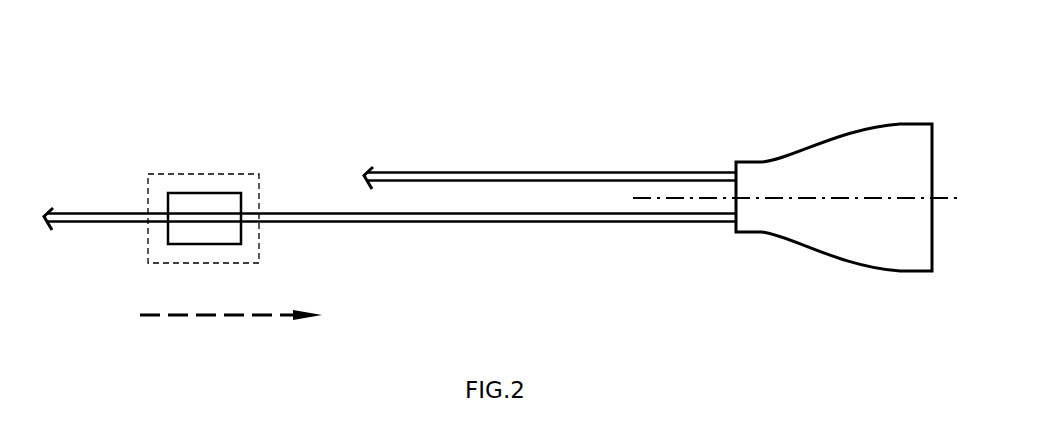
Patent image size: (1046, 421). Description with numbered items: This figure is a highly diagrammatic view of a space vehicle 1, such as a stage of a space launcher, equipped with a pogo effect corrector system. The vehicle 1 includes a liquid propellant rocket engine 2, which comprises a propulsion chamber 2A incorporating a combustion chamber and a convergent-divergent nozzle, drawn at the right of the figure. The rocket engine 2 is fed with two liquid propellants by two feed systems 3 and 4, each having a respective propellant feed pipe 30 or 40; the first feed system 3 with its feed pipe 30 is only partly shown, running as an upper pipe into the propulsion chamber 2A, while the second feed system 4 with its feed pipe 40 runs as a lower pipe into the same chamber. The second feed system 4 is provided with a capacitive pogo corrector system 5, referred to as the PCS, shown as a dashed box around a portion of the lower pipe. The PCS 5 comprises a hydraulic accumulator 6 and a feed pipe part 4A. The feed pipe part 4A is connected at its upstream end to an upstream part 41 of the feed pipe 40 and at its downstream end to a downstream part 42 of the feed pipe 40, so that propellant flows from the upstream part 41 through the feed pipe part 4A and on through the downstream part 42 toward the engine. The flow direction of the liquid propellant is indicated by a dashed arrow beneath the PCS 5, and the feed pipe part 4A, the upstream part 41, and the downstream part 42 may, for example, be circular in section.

The space vehicle 1 is at (631, 80).
The liquid propellant rocket engine 2 is at (861, 123).
The propulsion chamber 2A is at (786, 157).
The first feed system 3 is at (415, 158).
The propellant feed pipe 30 is at (493, 173).
The second feed system 4 is at (418, 233).
The propellant feed pipe 40 is at (493, 223).
The upstream part 41 is at (99, 213).
The downstream part 42 is at (308, 223).
The feed pipe part 4A is at (167, 226).
The capacitive pogo corrector system 5 is at (175, 167).
The hydraulic accumulator 6 is at (215, 193).